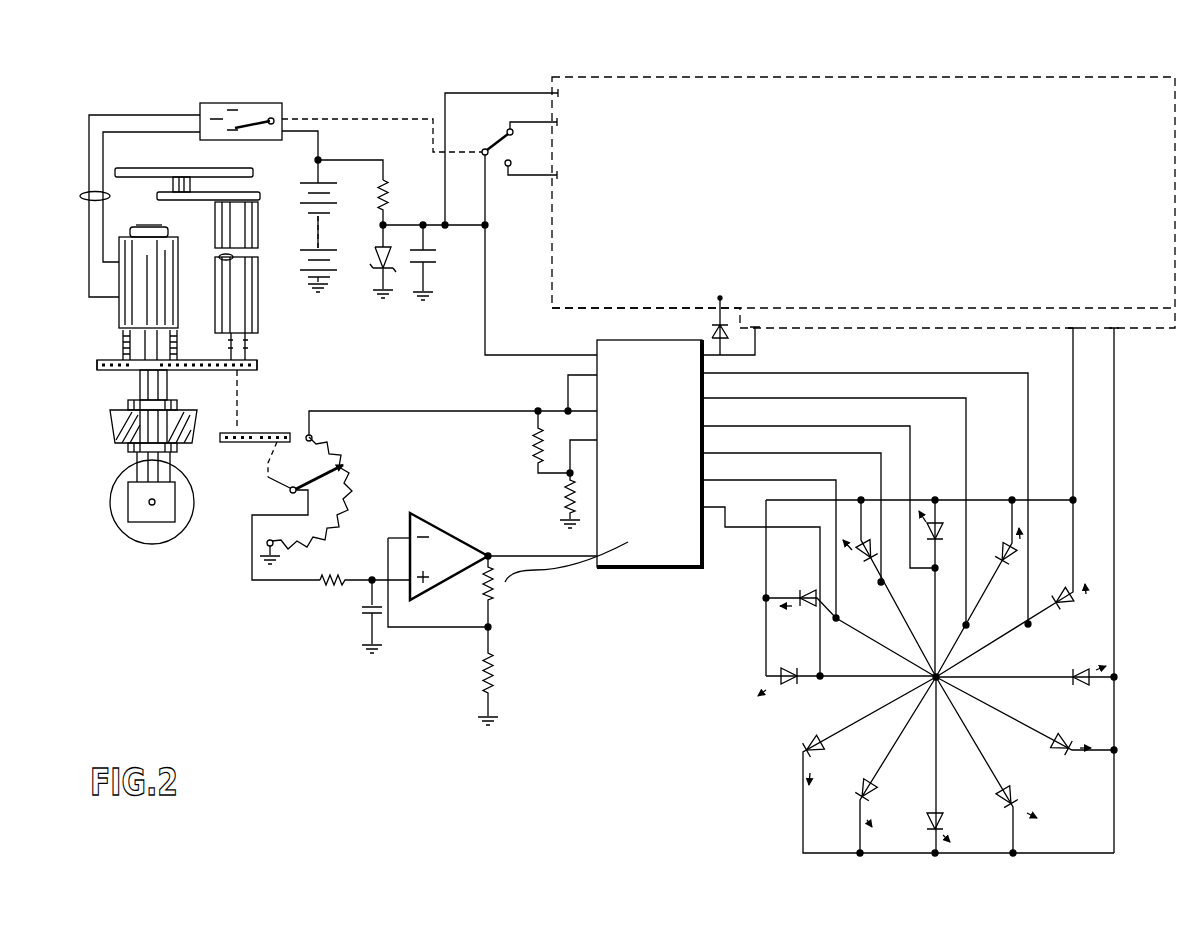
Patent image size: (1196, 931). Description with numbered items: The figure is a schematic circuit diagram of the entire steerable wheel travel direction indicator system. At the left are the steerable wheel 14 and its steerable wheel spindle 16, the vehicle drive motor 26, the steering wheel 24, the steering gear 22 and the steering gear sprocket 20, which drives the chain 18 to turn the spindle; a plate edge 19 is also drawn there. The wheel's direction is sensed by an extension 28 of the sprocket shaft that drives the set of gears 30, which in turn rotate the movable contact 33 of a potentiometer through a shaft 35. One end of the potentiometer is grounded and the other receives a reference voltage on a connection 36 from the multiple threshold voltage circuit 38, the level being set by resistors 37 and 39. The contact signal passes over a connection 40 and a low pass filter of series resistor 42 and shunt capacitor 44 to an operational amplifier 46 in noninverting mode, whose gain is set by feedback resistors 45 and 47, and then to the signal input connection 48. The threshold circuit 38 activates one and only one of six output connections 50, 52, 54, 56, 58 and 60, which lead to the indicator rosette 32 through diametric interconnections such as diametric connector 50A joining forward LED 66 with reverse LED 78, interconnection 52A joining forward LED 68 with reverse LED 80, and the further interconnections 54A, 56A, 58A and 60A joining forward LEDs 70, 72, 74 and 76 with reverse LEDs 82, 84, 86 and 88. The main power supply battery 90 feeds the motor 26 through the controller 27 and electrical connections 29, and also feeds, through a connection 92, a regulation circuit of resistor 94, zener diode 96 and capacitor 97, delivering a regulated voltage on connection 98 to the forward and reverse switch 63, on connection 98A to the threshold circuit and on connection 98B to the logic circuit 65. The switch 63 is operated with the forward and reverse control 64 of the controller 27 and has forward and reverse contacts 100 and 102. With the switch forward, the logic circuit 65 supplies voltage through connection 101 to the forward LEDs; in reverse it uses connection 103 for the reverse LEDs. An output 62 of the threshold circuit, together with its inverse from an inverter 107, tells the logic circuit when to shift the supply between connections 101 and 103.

The steerable wheel 14 is at (112, 498).
The steerable wheel spindle 16 is at (140, 385).
The chain 18 is at (205, 360).
The plate edge 19 is at (97, 365).
The steering gear sprocket 20 is at (257, 363).
The steering gear 22 is at (215, 218).
The steering wheel 24 is at (162, 168).
The vehicle drive motor 26 is at (141, 227).
The controller 27 is at (232, 103).
The extension of the sprocket shaft 28 is at (235, 405).
The electrical connections 29 is at (80, 197).
The set of gears 30 is at (250, 420).
The indicator rosette 32 is at (746, 714).
The movable contact 33 is at (320, 473).
The shaft 35 is at (262, 470).
The connection 36 is at (398, 410).
The resistor 37 is at (536, 443).
The multiple threshold voltage circuit 38 is at (605, 353).
The resistor 39 is at (568, 493).
The connection 40 is at (268, 510).
The series resistor 42 is at (327, 580).
The shunt capacitor 44 is at (365, 608).
The feedback resistor 45 is at (487, 593).
The operational amplifier 46 is at (443, 535).
The feedback resistor 47 is at (486, 672).
The signal input connection 48 is at (541, 556).
The output connection 50 is at (738, 527).
The output connection 52 is at (784, 480).
The output connection 54 is at (858, 453).
The output connection 56 is at (898, 426).
The output connection 58 is at (952, 398).
The output connection 60 is at (897, 372).
The output 62 is at (757, 357).
The forward and reverse switch 63 is at (488, 150).
The forward and reverse control 64 is at (262, 108).
The logic circuit 65 is at (547, 268).
The forward LED 66 is at (782, 671).
The forward LED 68 is at (808, 596).
The forward LED 70 is at (862, 560).
The forward LED 72 is at (945, 510).
The forward LED 74 is at (1012, 545).
The forward LED 76 is at (1068, 597).
The reverse LED 78 is at (1078, 670).
The reverse LED 80 is at (1058, 752).
The reverse LED 82 is at (1005, 810).
The reverse LED 84 is at (927, 820).
The reverse LED 86 is at (850, 800).
The reverse LED 88 is at (807, 740).
The main power supply battery 90 is at (290, 201).
The connection 92 is at (365, 160).
The resistor 94 is at (380, 193).
The zener diode 96 is at (375, 262).
The capacitor 97 is at (440, 254).
The connection 98 is at (482, 207).
The connection 98A is at (482, 349).
The supply connection 98B is at (445, 93).
The forward contact 100 is at (530, 122).
The connection 101 is at (1073, 472).
The reverse contact 102 is at (541, 176).
The connection 103 is at (1116, 622).
The inverter 107 is at (712, 333).
The diametric connector 50A is at (876, 675).
The diametric interconnection 52A is at (882, 645).
The node 54A is at (898, 614).
The line 56A is at (935, 758).
The node 58A is at (970, 638).
The node 60A is at (985, 653).